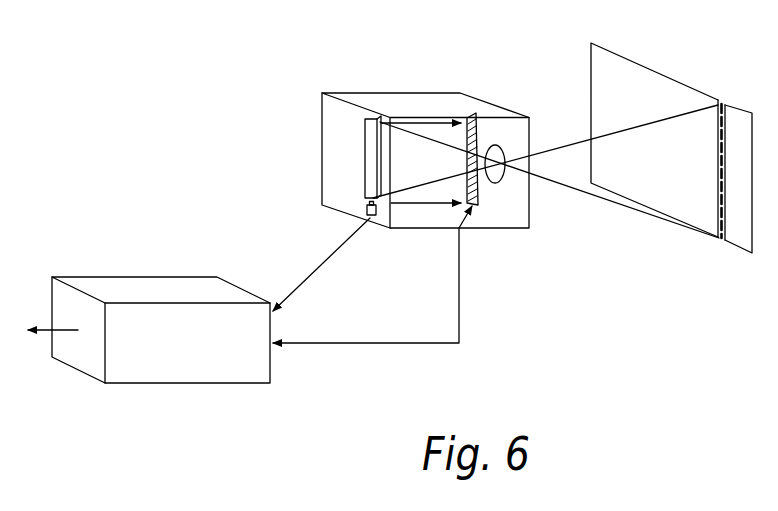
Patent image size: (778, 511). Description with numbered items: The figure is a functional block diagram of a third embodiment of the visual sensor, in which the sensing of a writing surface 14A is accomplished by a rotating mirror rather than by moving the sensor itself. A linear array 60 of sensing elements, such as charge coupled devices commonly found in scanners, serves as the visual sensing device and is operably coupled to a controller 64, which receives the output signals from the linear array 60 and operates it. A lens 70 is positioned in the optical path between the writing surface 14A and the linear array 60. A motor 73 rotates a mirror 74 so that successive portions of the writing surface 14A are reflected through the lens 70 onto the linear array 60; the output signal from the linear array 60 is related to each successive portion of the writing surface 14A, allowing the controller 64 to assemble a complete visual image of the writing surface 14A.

The writing surface 14A is at (732, 243).
The linear array 60 is at (478, 113).
The controller 64 is at (202, 367).
The lens 70 is at (498, 146).
The motor 73 is at (366, 210).
The mirror 74 is at (333, 153).